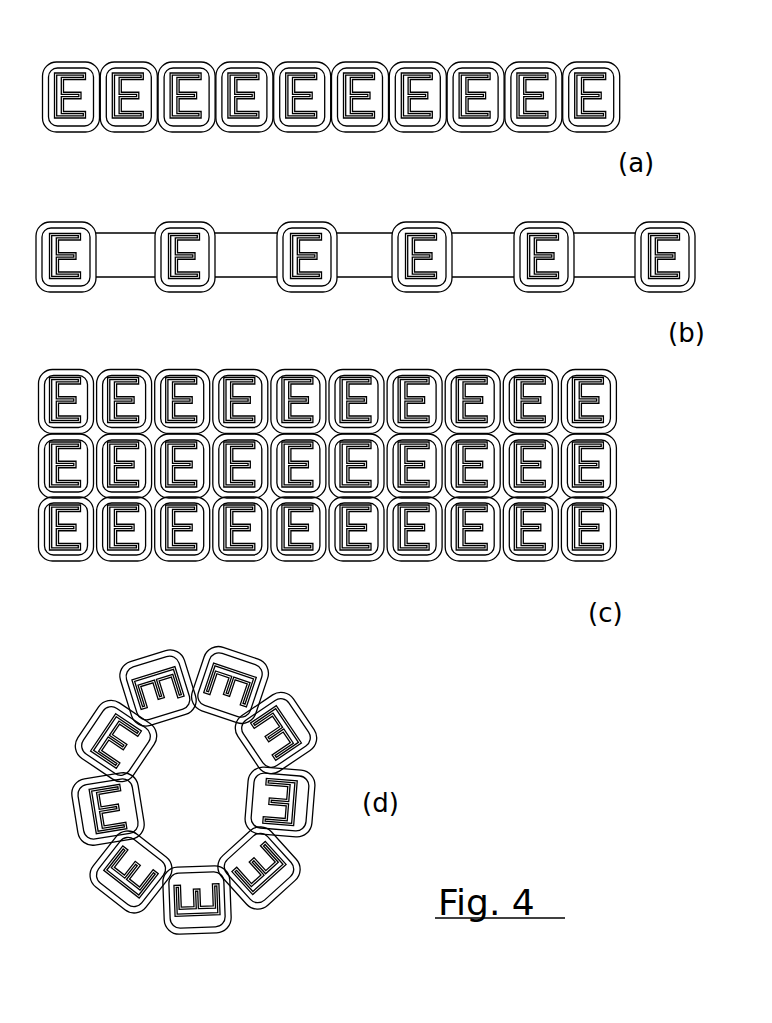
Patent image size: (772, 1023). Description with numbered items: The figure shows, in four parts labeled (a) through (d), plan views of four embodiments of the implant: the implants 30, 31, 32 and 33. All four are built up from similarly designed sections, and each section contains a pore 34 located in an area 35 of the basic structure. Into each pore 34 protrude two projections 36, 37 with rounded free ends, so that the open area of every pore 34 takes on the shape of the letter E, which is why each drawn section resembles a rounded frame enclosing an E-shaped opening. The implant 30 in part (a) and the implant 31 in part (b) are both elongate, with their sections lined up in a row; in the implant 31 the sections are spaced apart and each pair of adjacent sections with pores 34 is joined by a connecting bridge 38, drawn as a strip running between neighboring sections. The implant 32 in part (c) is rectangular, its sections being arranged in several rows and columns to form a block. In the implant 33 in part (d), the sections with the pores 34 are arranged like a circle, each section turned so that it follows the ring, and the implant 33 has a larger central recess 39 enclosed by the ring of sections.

The implant 30 is at (226, 148).
The implant 31 is at (227, 298).
The implant 32 is at (343, 578).
The implant 33 is at (140, 922).
The pore 34 is at (343, 73).
The area of the basic structure 35 is at (417, 134).
The projection 36 is at (181, 88).
The projection 37 is at (183, 112).
The connecting bridge 38 is at (236, 251).
The central recess 39 is at (210, 807).